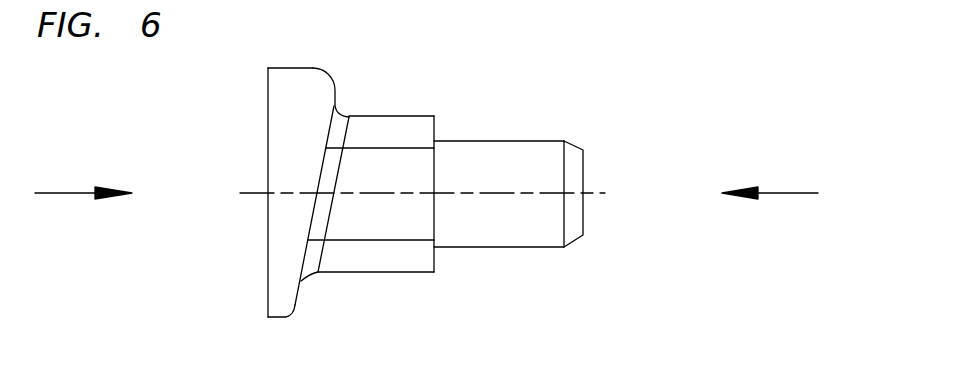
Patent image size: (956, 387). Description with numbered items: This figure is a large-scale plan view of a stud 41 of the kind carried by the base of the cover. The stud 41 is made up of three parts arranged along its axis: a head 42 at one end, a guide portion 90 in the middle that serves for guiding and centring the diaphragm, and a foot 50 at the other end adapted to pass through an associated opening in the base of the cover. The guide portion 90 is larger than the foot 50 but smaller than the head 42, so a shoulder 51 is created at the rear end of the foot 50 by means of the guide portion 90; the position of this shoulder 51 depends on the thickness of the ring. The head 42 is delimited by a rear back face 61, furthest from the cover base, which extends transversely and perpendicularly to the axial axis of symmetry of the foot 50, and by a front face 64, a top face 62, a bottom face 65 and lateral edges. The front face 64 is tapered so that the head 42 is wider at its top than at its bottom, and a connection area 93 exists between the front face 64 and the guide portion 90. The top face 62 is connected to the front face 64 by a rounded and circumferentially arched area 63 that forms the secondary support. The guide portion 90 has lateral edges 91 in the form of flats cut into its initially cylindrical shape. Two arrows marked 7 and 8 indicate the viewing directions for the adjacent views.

The view direction arrow for FIG. 7 is at (770, 174).
The view direction arrow for FIG. 8 is at (83, 174).
The stud 41 is at (508, 184).
The head 42 is at (291, 190).
The foot 50 is at (533, 233).
The shoulder 51 is at (434, 125).
The rear back face 61 is at (268, 290).
The top face 62 is at (298, 68).
The rounded and circumferentially arched area 63 is at (337, 78).
The front face 64 is at (298, 297).
The bottom face 65 is at (275, 318).
The guide portion 90 is at (401, 189).
The lateral edges 91 is at (418, 222).
The connection area 93 is at (322, 215).